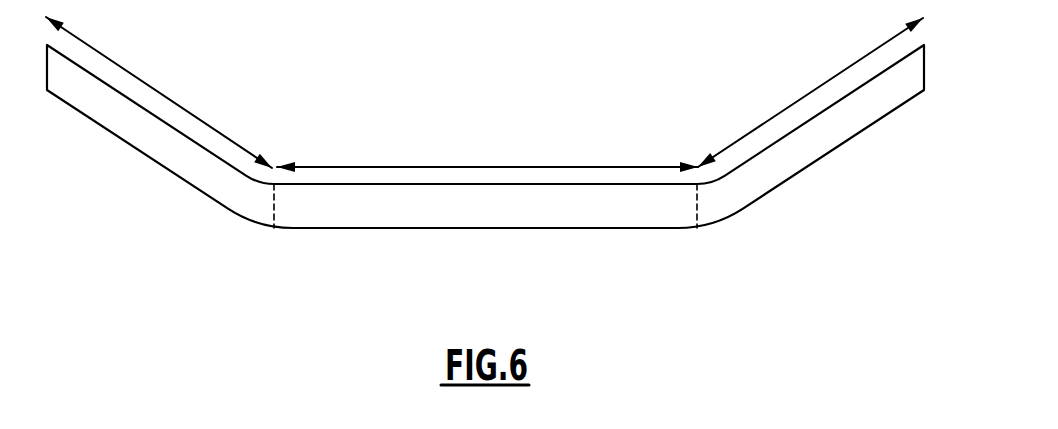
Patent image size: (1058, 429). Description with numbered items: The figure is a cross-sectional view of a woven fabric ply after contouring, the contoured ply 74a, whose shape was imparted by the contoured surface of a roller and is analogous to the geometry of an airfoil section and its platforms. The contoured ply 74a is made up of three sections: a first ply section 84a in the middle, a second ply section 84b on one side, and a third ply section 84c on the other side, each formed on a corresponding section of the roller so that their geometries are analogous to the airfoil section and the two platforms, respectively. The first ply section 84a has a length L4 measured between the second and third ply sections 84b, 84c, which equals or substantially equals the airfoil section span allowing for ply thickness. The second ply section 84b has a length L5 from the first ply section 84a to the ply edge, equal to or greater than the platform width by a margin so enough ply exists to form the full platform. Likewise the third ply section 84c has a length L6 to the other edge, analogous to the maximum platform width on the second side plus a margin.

The length of first ply section L4 is at (521, 166).
The length of second ply section L5 is at (170, 97).
The length of third ply section L6 is at (801, 97).
The contoured ply 74a is at (397, 137).
The first ply section 84a is at (273, 252).
The second ply section 84b is at (273, 252).
The third ply section 84c is at (927, 103).